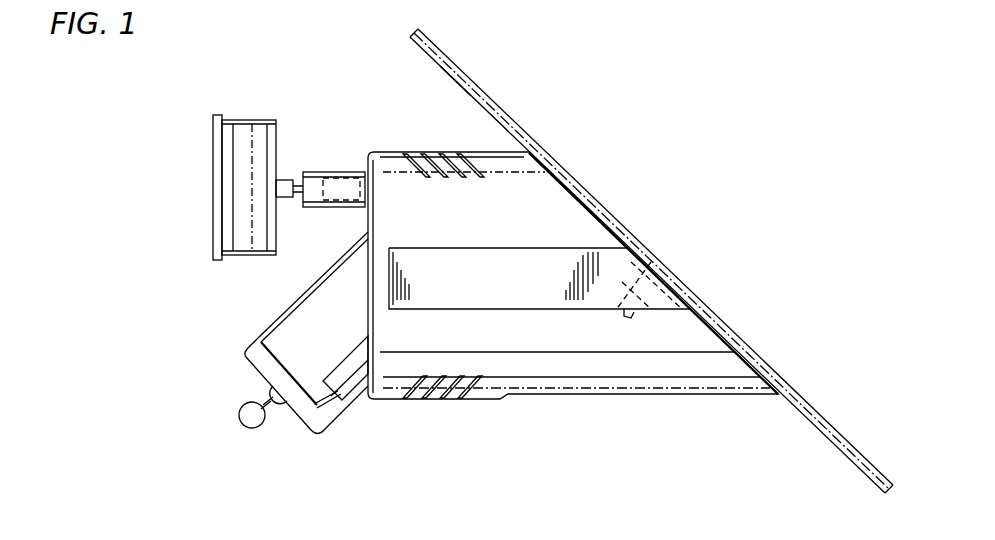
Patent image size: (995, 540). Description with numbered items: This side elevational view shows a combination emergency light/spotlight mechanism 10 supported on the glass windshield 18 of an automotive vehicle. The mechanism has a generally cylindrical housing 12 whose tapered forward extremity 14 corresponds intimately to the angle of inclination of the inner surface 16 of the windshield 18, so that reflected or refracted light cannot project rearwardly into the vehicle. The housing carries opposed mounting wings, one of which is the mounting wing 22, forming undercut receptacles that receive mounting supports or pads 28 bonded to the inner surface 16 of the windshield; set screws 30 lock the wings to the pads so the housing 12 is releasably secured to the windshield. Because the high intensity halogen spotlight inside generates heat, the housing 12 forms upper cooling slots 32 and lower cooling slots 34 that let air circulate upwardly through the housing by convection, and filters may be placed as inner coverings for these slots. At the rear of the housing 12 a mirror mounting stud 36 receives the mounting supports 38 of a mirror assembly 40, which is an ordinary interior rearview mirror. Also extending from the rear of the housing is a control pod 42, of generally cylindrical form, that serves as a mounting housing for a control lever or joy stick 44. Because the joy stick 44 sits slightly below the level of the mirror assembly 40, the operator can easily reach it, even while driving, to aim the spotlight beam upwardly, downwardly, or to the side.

The combination emergency light/spotlight mechanism 10 is at (312, 51).
The housing 12 is at (642, 383).
The tapered forward extremity 14 is at (711, 323).
The inner surface 16 is at (409, 37).
The glass windshield 18 is at (458, 74).
The mounting wing 22 is at (517, 247).
The mounting supports or pads 28 is at (651, 262).
The set screws 30 is at (626, 318).
The upper cooling slots 32 is at (438, 153).
The lower cooling slots 34 is at (442, 400).
The mirror mounting stud 36 is at (336, 178).
The mounting supports 38 is at (322, 210).
The mirror assembly 40 is at (243, 118).
The control pod 42 is at (281, 320).
The control lever or joy stick 44 is at (243, 410).